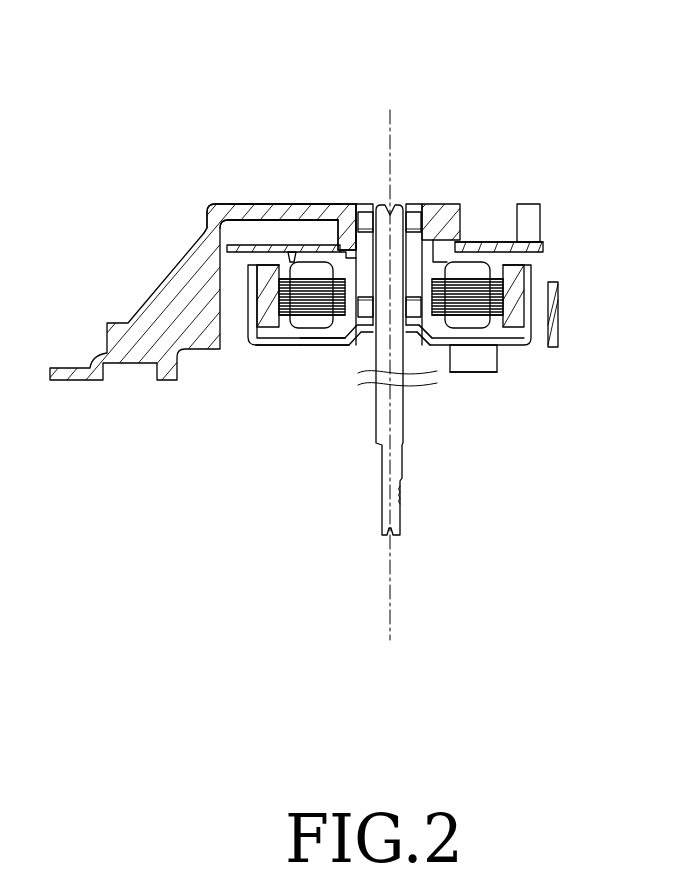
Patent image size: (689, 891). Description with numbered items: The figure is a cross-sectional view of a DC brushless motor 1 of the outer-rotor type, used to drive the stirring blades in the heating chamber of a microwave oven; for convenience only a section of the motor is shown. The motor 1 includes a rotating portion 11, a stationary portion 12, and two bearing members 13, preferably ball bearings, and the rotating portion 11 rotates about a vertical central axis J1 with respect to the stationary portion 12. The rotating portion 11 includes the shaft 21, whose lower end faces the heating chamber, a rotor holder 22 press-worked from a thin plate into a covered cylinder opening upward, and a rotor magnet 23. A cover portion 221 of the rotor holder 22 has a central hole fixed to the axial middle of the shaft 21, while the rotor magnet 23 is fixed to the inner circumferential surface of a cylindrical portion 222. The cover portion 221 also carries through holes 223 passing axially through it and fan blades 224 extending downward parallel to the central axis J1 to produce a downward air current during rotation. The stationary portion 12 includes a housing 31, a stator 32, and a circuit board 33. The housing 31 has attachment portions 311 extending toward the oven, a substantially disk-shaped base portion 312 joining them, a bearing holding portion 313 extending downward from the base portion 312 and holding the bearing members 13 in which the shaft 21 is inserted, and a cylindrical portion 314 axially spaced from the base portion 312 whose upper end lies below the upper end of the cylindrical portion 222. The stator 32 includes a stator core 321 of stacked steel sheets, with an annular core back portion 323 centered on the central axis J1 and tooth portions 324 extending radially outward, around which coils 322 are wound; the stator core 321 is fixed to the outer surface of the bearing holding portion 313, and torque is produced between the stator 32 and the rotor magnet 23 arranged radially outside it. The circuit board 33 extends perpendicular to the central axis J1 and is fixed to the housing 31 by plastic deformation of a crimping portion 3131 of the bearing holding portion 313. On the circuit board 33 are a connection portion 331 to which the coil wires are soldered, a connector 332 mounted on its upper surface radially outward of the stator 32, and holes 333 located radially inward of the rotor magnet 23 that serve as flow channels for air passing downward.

The DC brushless motor 1 is at (25, 54).
The rotating portion 11 is at (249, 391).
The stationary portion 12 is at (188, 178).
The bearing members 13 is at (365, 203).
The shaft 21 is at (396, 428).
The rotor holder 22 is at (284, 360).
The cover portion 221 is at (323, 347).
The cylindrical portion 222 is at (531, 330).
The through holes 223 is at (480, 365).
The fan blades 224 is at (490, 360).
The rotor magnet 23 is at (518, 273).
The housing 31 is at (299, 181).
The attachment portions 311 is at (252, 213).
The base portion 312 is at (457, 203).
The bearing holding portion 313 is at (351, 203).
The crimping portion 3131 is at (204, 232).
The cylindrical portion 314 is at (558, 285).
The stator 32 is at (276, 334).
The stator core 321 is at (286, 286).
The coils 322 is at (330, 324).
The core back portion 323 is at (433, 345).
The tooth portions 324 is at (500, 302).
The circuit board 33 is at (507, 243).
The connection portion 331 is at (297, 253).
The connector 332 is at (531, 210).
The holes 333 is at (481, 243).
The central axis J1 is at (392, 158).